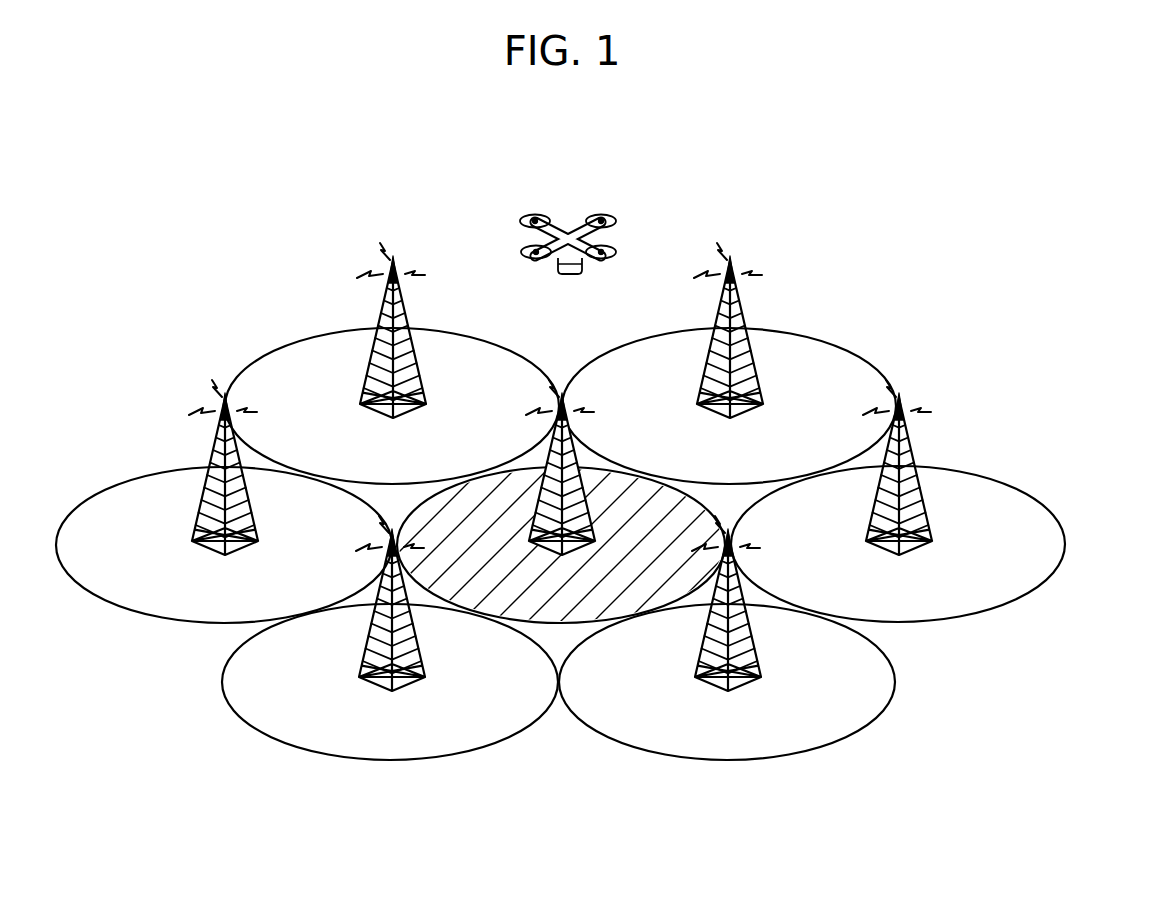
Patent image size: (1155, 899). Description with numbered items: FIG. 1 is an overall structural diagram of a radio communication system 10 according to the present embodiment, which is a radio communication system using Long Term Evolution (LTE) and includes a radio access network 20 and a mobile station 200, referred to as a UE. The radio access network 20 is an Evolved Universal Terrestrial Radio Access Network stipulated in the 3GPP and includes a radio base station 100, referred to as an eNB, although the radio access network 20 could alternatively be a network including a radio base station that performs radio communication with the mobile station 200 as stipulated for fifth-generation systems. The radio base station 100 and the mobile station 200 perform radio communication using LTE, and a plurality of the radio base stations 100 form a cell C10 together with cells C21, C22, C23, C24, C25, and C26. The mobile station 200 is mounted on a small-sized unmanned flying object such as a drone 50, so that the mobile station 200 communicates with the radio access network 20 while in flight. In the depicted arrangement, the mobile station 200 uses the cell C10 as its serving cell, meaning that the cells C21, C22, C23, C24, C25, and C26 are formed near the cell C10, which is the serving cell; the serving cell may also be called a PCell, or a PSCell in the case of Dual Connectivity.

The radio communication system 10 is at (975, 212).
The radio access network 20 is at (675, 777).
The drone 50 is at (568, 248).
The radio base station 100 is at (577, 455).
The mobile station 200 is at (569, 275).
The cell C10 is at (567, 600).
The cell C21 is at (837, 363).
The cell C22 is at (1053, 528).
The cell C23 is at (843, 723).
The cell C24 is at (235, 704).
The cell C25 is at (112, 498).
The cell C26 is at (273, 360).